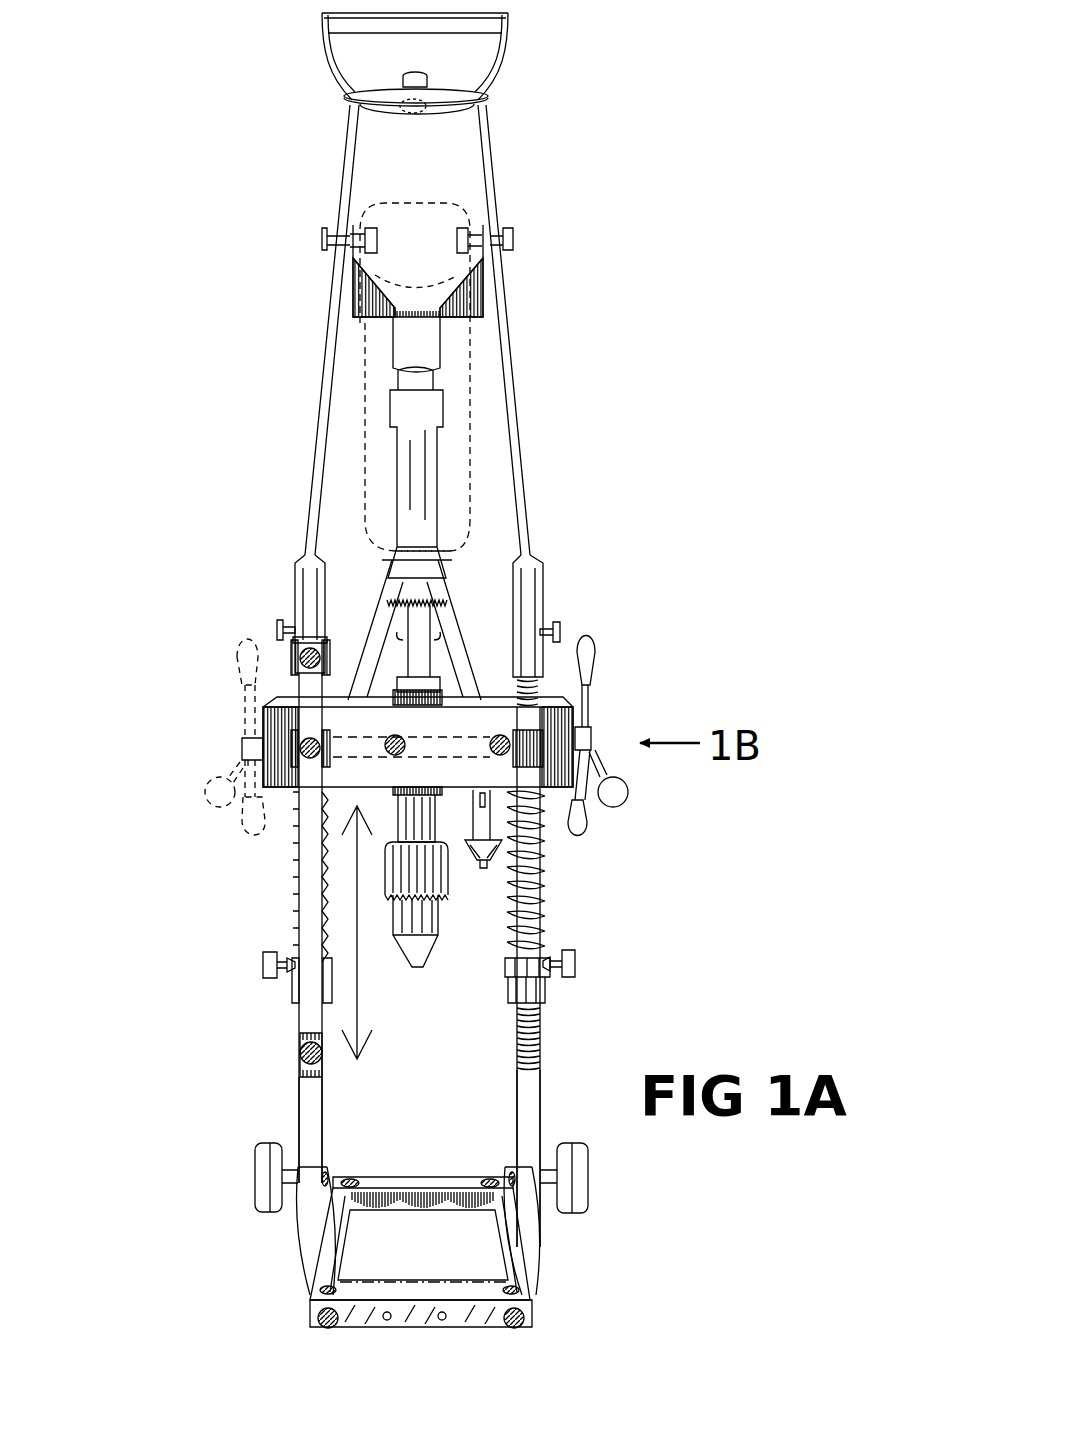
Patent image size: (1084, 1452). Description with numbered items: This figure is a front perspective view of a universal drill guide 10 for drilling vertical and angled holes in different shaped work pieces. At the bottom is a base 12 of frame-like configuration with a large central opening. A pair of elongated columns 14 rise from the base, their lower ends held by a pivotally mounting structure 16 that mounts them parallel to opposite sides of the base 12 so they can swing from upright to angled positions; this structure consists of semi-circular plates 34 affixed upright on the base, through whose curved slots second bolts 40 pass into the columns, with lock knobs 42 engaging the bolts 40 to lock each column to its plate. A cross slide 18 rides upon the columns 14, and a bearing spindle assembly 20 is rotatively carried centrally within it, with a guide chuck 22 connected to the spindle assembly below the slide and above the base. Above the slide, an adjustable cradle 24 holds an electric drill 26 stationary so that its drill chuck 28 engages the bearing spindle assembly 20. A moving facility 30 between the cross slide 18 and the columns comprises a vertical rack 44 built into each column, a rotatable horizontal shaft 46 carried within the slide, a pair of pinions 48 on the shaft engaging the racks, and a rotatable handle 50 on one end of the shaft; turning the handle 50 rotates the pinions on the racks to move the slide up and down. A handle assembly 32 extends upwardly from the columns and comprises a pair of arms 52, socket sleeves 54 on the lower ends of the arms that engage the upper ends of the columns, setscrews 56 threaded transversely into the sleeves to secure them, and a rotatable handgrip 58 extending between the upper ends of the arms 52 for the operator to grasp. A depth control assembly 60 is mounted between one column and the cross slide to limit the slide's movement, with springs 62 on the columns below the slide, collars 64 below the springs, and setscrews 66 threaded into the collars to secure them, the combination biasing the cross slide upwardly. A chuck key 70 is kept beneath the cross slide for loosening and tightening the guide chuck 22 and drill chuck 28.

The universal drill guide 10 is at (205, 709).
The base 12 is at (400, 1183).
The elongated columns 14 is at (298, 1105).
The pivotally mounting structure 16 is at (503, 1161).
The cross slide 18 is at (335, 705).
The bearing spindle assembly 20 is at (415, 667).
The guide chuck 22 is at (420, 948).
The adjustable cradle 24 is at (428, 461).
The electric drill 26 is at (357, 447).
The drill chuck 28 is at (450, 563).
The moving facility 30 is at (604, 738).
The handle assembly 32 is at (336, 178).
The semi-circular plates 34 is at (317, 1230).
The second bolts 40 is at (325, 1180).
The lock knobs 42 is at (262, 1175).
The vertical racks 44 is at (540, 1031).
The rotatable horizontal shaft 46 is at (243, 747).
The pinions 48 is at (330, 778).
The rotatable handle 50 is at (205, 790).
The arms 52 is at (330, 332).
The socket sleeves 54 is at (300, 573).
The setscrews 56 is at (280, 625).
The rotatable handgrip 58 is at (328, 58).
The depth control assembly 60 is at (305, 868).
The springs 62 is at (296, 910).
The collars 64 is at (292, 985).
The setscrews 66 is at (263, 962).
The chuck key 70 is at (490, 862).